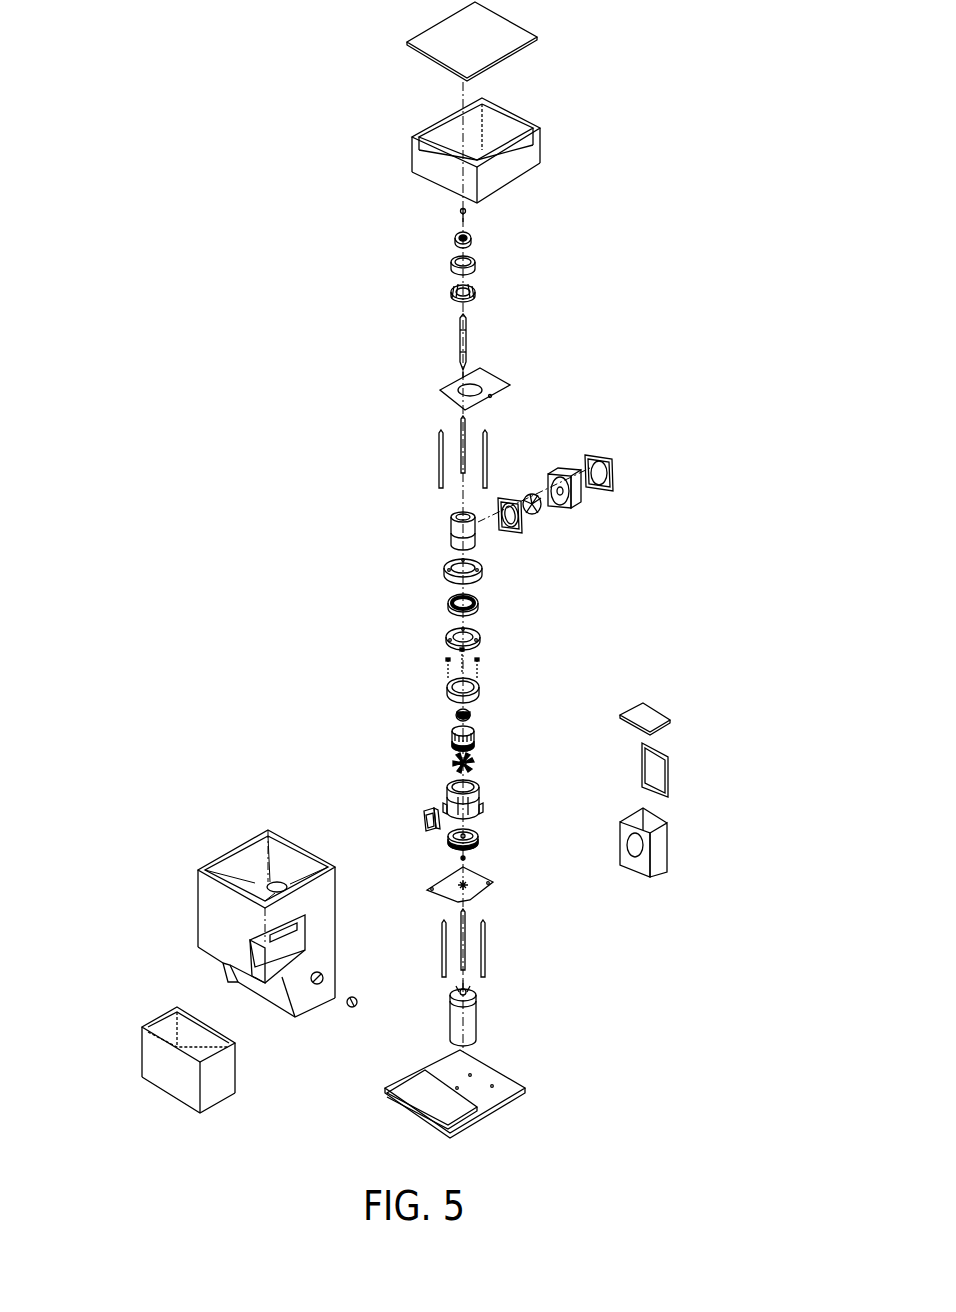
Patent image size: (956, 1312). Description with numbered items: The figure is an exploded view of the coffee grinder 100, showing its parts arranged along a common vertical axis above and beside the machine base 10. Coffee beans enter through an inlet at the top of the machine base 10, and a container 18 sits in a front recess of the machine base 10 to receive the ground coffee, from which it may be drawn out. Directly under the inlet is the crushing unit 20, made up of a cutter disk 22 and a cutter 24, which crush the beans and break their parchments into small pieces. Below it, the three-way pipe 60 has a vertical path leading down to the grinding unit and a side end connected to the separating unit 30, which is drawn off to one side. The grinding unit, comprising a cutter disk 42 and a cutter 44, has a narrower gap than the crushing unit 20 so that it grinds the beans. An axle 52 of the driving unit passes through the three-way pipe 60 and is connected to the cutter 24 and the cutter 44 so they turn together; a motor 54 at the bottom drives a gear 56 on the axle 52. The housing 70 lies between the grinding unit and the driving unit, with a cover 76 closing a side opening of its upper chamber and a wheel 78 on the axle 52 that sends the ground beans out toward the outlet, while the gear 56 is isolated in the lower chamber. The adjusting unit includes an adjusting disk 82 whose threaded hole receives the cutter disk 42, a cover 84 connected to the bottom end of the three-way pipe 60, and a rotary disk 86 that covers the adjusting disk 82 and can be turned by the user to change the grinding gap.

The coffee grinder 100 is at (122, 108).
The machine base 10 is at (151, 890).
The container 18 is at (148, 1060).
The crushing unit 20 is at (615, 190).
The cutter disk 22 is at (478, 292).
The cutter 24 is at (473, 238).
The separating unit 30 is at (576, 446).
The cutter disk 42 is at (470, 712).
The cutter 44 is at (476, 742).
The axle 52 is at (459, 340).
The motor 54 is at (472, 1022).
The gear 56 is at (478, 845).
The three-way pipe 60 is at (438, 518).
The housing 70 is at (502, 800).
The cover 76 is at (423, 823).
The wheel 78 is at (455, 765).
The adjusting disk 82 is at (447, 643).
The cover 84 is at (480, 605).
The rotary disk 86 is at (445, 570).